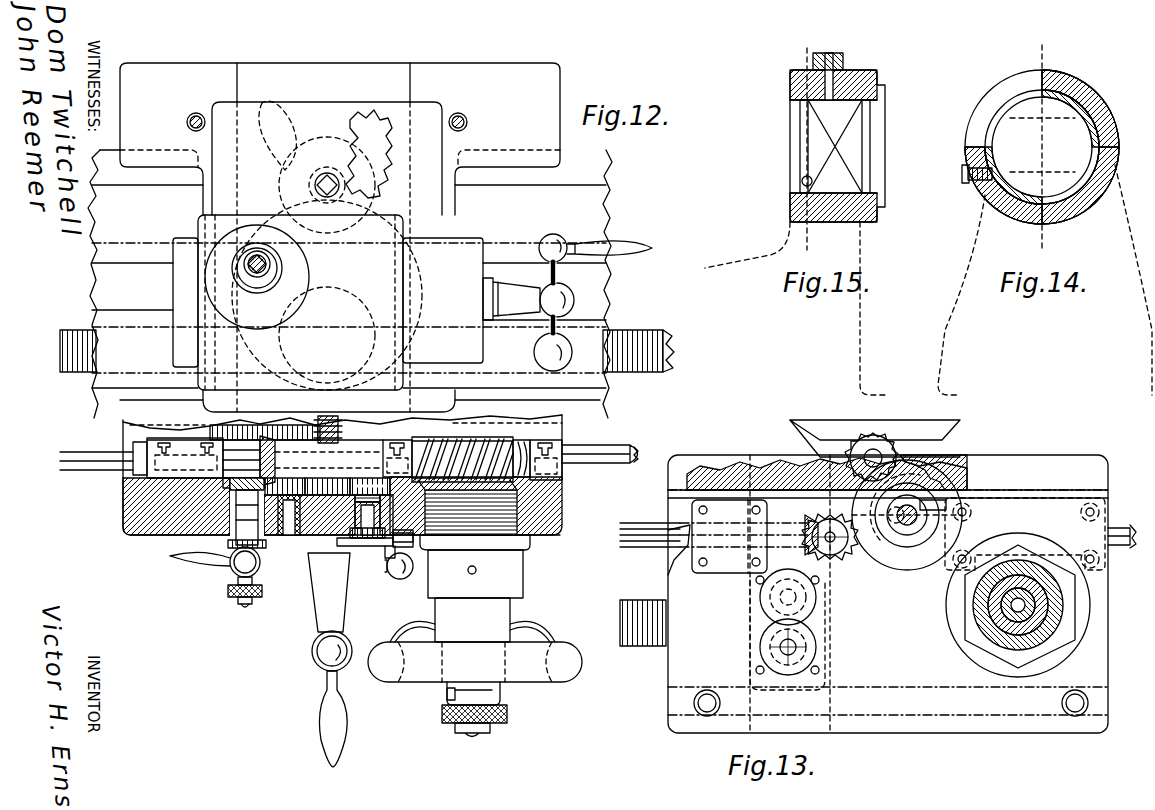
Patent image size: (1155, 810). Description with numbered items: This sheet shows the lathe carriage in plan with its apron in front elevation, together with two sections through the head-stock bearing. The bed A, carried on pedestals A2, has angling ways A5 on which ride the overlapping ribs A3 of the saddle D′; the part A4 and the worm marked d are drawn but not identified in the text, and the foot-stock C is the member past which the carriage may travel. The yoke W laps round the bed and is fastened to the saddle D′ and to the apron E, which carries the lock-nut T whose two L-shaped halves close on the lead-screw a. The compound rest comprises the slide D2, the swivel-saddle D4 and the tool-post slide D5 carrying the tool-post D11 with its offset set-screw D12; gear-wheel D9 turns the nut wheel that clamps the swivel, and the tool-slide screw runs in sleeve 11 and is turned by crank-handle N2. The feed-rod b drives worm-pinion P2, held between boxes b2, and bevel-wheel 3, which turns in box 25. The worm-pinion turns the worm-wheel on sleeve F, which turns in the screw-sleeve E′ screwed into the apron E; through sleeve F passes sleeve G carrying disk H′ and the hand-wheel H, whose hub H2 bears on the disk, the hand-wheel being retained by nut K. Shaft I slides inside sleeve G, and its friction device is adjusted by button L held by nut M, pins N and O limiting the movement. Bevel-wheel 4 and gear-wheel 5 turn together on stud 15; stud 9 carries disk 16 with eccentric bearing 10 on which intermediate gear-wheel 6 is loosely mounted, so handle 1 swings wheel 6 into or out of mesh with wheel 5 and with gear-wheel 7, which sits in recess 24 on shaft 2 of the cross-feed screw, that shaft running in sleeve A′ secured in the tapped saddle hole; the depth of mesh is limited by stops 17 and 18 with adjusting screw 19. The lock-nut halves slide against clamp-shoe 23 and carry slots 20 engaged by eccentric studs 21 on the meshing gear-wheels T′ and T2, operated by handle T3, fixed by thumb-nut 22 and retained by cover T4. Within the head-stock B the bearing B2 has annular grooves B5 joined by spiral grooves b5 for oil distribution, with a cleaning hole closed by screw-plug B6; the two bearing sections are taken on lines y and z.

In FIG. 12, the saddle D′ is at (360, 237).
In FIG. 13, the saddle D′ is at (690, 470).
In FIG. 12, the slide D2 is at (327, 253).
In FIG. 12, the gear-wheel D9 is at (396, 170).
In FIG. 12, the yoke W is at (187, 122).
In FIG. 12, the bed A is at (350, 284).
In FIG. 12, the pillars or pedestals A2 is at (338, 280).
In FIG. 12, the overlapping ribs A3 is at (112, 404).
In FIG. 12, the frame rail A4 is at (326, 284).
In FIG. 12, the angling ways A5 is at (618, 395).
In FIG. 12, the sleeve A′ is at (318, 580).
In FIG. 12, the lock-nut T is at (150, 548).
In FIG. 12, the swivel-saddle D4 is at (328, 302).
In FIG. 12, the offset set-screw D12 is at (248, 262).
In FIG. 12, the tool-post D11 is at (272, 275).
In FIG. 12, the tool-post slide D5 is at (210, 378).
In FIG. 12, the sleeve 11 is at (511, 299).
In FIG. 12, the crank-handle N2 is at (560, 270).
In FIG. 12, the lead-screw a is at (630, 330).
In FIG. 13, the lead-screw a is at (652, 646).
In FIG. 12, the worm d is at (80, 375).
In FIG. 12, the head-stock B is at (333, 429).
In FIG. 15, the head-stock B is at (816, 221).
In FIG. 14, the head-stock B is at (1045, 220).
In FIG. 12, the feed-rod b is at (100, 460).
In FIG. 13, the feed-rod b is at (655, 525).
In FIG. 12, the dovetail clamp-shoe 23 is at (347, 463).
In FIG. 13, the dovetail clamp-shoe 23 is at (729, 536).
In FIG. 12, the bracket bearing or box 25 is at (149, 432).
In FIG. 12, the bevel-wheel 3 is at (249, 461).
In FIG. 13, the bevel-wheel 3 is at (780, 525).
In FIG. 12, the bevel-wheel 4 is at (292, 480).
In FIG. 13, the bevel-wheel 4 is at (880, 432).
In FIG. 12, the gear-wheel 5 is at (322, 480).
In FIG. 13, the gear-wheel 5 is at (907, 522).
In FIG. 12, the intermediate gear-wheel 6 is at (355, 480).
In FIG. 13, the intermediate gear-wheel 6 is at (888, 486).
In FIG. 12, the cap or cover T4 is at (228, 540).
In FIG. 12, the transverse recess or slot 20 is at (236, 495).
In FIG. 12, the eccentric studs 21 is at (240, 506).
In FIG. 13, the eccentric studs 21 is at (770, 610).
In FIG. 12, the thumb-piece or handle T3 is at (232, 570).
In FIG. 12, the thumb-nut or button 22 is at (236, 598).
In FIG. 12, the gear-wheel T2 is at (256, 545).
In FIG. 13, the gear-wheel T2 is at (820, 650).
In FIG. 12, the eccentric stud-bearing 10 is at (340, 497).
In FIG. 13, the eccentric stud-bearing 10 is at (898, 515).
In FIG. 12, the stud 15 is at (289, 515).
In FIG. 12, the disk 16 is at (366, 496).
In FIG. 13, the disk 16 is at (906, 530).
In FIG. 12, the short shaft or stud 9 is at (367, 520).
In FIG. 12, the stop 17 is at (336, 542).
In FIG. 12, the handle or thumb piece 1 is at (393, 576).
In FIG. 12, the worm-pinion P2 is at (461, 450).
In FIG. 13, the worm-pinion P2 is at (1025, 534).
In FIG. 12, the boxes b2 is at (481, 447).
In FIG. 13, the boxes b2 is at (972, 512).
In FIG. 12, the apron E is at (548, 512).
In FIG. 13, the apron E is at (880, 735).
In FIG. 12, the sleeve F is at (560, 486).
In FIG. 13, the sleeve F is at (1052, 640).
In FIG. 12, the screw-sleeve E′ is at (532, 540).
In FIG. 13, the screw-sleeve E′ is at (1018, 605).
In FIG. 12, the adjustable stop 18 is at (414, 537).
In FIG. 12, the screw 19 is at (426, 556).
In FIG. 12, the disk H′ is at (433, 620).
In FIG. 12, the hub H2 is at (512, 604).
In FIG. 12, the hand-wheel H is at (475, 662).
In FIG. 13, the hand-wheel H is at (955, 430).
In FIG. 12, the nut or screw-sleeve K is at (502, 692).
In FIG. 12, the stop or pin N is at (446, 694).
In FIG. 12, the thumb-piece or button L is at (509, 716).
In FIG. 12, the stop or pin O is at (443, 710).
In FIG. 12, the nut M is at (466, 734).
In FIG. 15, the anti-friction bearings B2 is at (792, 96).
In FIG. 14, the anti-friction bearings B2 is at (992, 147).
In FIG. 15, the annular grooves B5 is at (800, 137).
In FIG. 14, the annular grooves B5 is at (1092, 152).
In FIG. 15, the spiral or reverse grooves b5 is at (820, 138).
In FIG. 14, the spiral or reverse grooves b5 is at (1042, 143).
In FIG. 14, the screw-plug B6 is at (962, 176).
In FIG. 15, the section line y is at (804, 146).
In FIG. 14, the section line z is at (1040, 147).
In FIG. 13, the shaft 2 is at (871, 457).
In FIG. 13, the gear-wheel 7 is at (850, 448).
In FIG. 13, the foot-stock C is at (930, 444).
In FIG. 13, the downwardly-opening recess 24 is at (933, 475).
In FIG. 13, the sleeve G is at (1022, 610).
In FIG. 13, the shaft I is at (995, 610).
In FIG. 13, the gear-wheel T′ is at (820, 606).